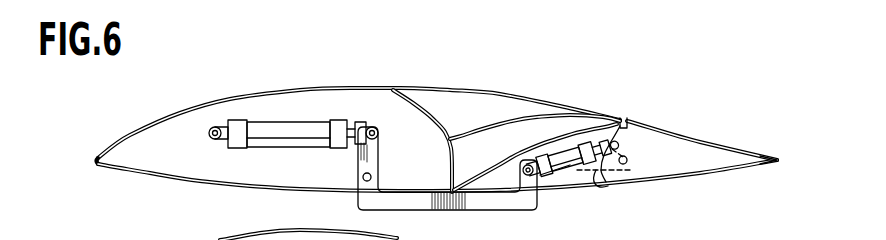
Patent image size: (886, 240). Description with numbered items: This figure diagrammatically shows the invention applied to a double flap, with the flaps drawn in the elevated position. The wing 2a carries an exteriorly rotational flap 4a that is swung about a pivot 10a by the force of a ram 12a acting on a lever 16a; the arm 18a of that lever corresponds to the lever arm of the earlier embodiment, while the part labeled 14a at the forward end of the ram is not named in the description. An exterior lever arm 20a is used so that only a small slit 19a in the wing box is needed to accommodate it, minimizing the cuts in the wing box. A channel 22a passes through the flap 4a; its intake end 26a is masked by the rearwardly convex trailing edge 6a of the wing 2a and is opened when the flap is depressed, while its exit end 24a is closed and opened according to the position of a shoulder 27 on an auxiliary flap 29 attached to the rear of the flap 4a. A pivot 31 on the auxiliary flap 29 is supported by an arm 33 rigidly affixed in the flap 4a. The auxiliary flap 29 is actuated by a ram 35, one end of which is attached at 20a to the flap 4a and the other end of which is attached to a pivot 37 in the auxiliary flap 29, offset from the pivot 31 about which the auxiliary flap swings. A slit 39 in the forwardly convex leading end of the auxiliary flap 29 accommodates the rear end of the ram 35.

The wing 2a is at (292, 89).
The exteriorly rotational flap 4a is at (535, 125).
The rearwardly convex trailing edge 6a is at (447, 163).
The pivot 10a is at (372, 175).
The ram 12a is at (293, 133).
The pivot eye 14a is at (208, 137).
The lever 16a is at (377, 135).
The bracket 18a is at (461, 211).
The slit 19a is at (352, 192).
The exterior lever arm 20a is at (535, 193).
The channel 22a is at (571, 117).
The exit end of channel 24a is at (623, 119).
The intake end of channel 26a is at (467, 160).
The shoulder 27 is at (634, 126).
The auxiliary flap 29 is at (750, 158).
The pivot 31 is at (630, 160).
The arm 33 is at (629, 180).
The ram 35 is at (567, 170).
The pivot 37 is at (616, 147).
The slit 39 is at (601, 186).